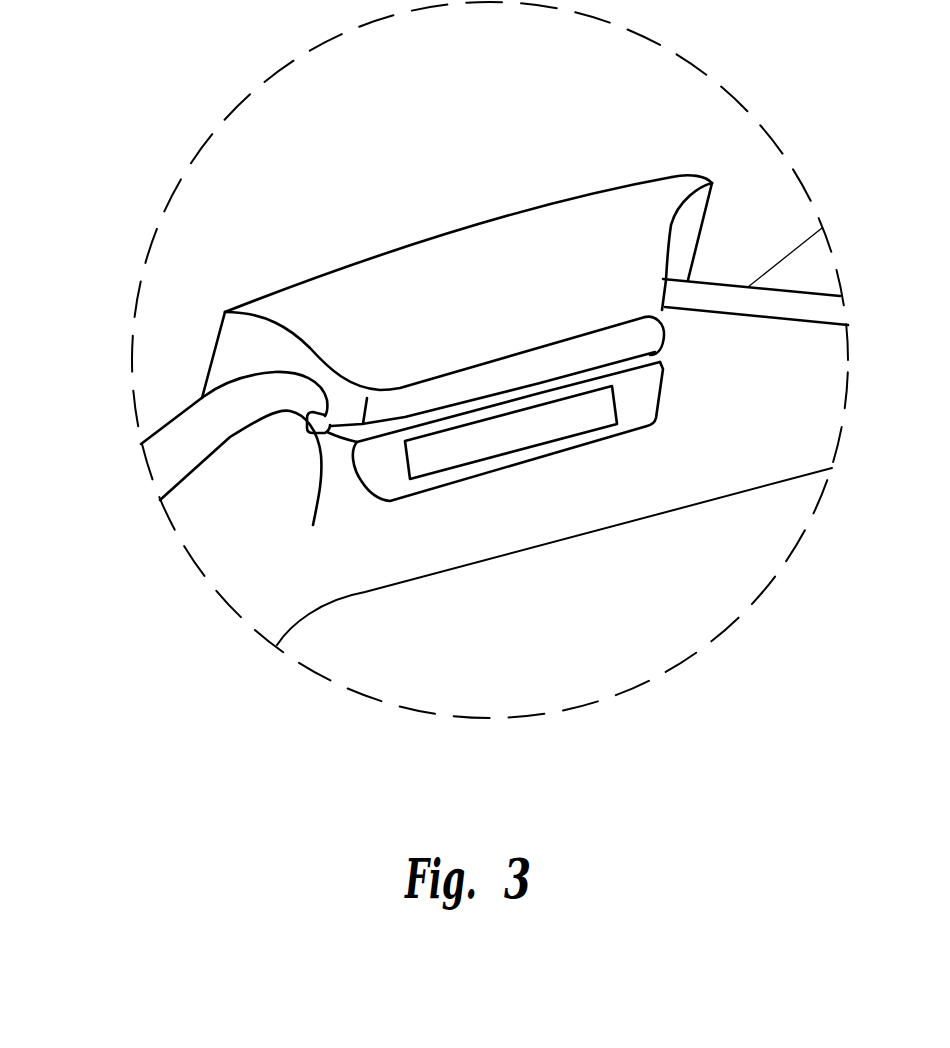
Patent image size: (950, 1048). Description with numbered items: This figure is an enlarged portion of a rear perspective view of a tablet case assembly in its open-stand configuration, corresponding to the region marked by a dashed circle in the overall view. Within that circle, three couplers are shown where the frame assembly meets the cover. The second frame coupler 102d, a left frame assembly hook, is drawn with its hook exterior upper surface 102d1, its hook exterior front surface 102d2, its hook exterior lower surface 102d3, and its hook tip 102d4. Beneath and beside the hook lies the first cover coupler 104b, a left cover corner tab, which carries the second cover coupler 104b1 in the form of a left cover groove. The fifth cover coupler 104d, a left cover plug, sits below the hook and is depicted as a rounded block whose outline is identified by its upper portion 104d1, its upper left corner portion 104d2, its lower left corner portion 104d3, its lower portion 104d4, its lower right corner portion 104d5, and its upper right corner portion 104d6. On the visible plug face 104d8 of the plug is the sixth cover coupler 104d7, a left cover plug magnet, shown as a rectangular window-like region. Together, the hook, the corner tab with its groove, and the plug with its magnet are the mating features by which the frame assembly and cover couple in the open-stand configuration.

The second frame coupler 102d is at (377, 251).
The hook exterior upper surface 102d1 is at (343, 290).
The hook exterior front surface 102d2 is at (618, 320).
The hook exterior lower surface 102d3 is at (553, 368).
The hook tip 102d4 is at (318, 426).
The first cover coupler 104b is at (277, 430).
The second cover coupler 104b1 is at (663, 330).
The fifth cover coupler 104d is at (562, 479).
The upper portion 104d1 is at (482, 403).
The upper left corner portion 104d2 is at (352, 452).
The lower left corner portion 104d3 is at (332, 430).
The lower portion 104d4 is at (447, 486).
The lower right corner portion 104d5 is at (650, 425).
The upper right corner portion 104d6 is at (660, 367).
The sixth cover coupler 104d7 is at (495, 440).
The plug face 104d8 is at (636, 412).